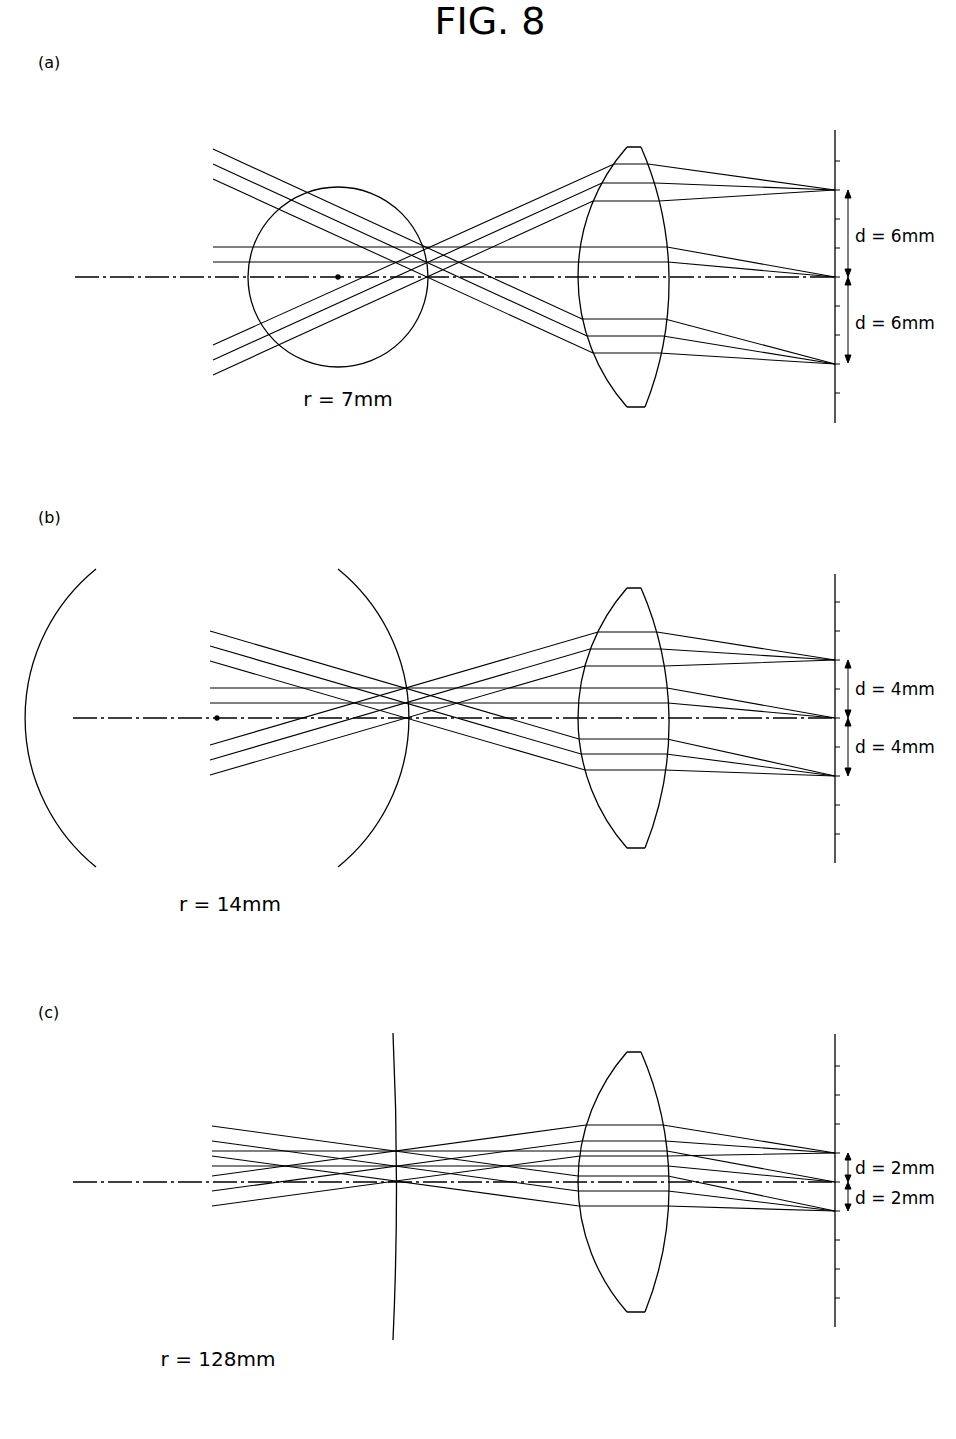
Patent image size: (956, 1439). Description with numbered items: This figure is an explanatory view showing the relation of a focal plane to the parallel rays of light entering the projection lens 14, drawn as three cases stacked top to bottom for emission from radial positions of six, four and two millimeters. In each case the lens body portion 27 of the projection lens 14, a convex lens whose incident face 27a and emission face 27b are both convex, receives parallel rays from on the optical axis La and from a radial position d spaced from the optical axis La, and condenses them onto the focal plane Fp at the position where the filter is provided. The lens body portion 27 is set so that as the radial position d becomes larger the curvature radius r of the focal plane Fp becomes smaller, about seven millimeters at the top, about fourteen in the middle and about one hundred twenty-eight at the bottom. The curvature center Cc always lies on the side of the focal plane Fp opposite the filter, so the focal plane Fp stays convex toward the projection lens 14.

The projection lens 14 is at (634, 693).
The lens body portion 27 is at (634, 693).
The incident face 27a is at (650, 160).
The emission face 27b is at (620, 157).
The curvature center Cc is at (337, 274).
The focal plane Fp is at (401, 203).
The optical axis La is at (93, 276).